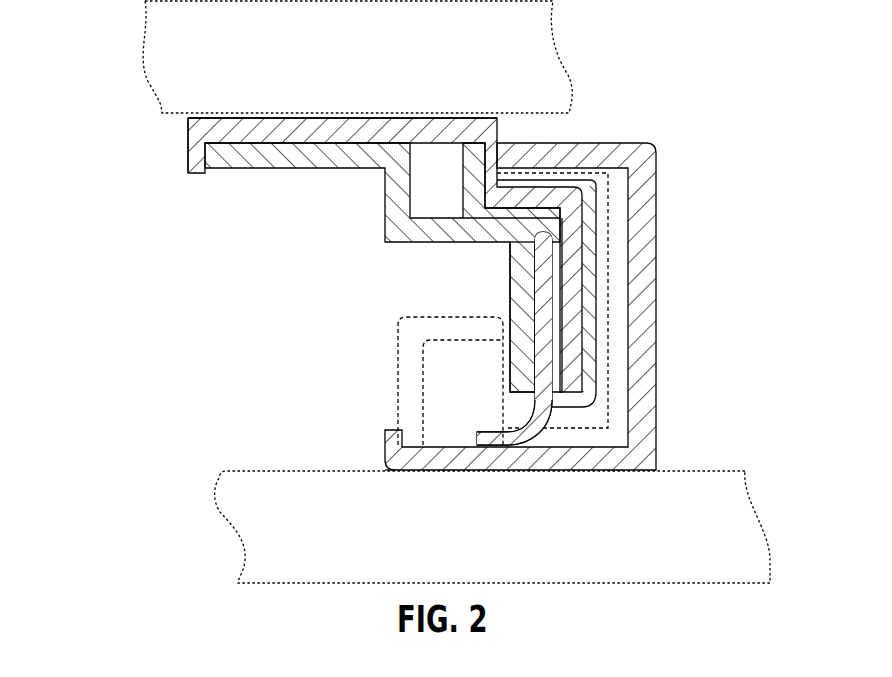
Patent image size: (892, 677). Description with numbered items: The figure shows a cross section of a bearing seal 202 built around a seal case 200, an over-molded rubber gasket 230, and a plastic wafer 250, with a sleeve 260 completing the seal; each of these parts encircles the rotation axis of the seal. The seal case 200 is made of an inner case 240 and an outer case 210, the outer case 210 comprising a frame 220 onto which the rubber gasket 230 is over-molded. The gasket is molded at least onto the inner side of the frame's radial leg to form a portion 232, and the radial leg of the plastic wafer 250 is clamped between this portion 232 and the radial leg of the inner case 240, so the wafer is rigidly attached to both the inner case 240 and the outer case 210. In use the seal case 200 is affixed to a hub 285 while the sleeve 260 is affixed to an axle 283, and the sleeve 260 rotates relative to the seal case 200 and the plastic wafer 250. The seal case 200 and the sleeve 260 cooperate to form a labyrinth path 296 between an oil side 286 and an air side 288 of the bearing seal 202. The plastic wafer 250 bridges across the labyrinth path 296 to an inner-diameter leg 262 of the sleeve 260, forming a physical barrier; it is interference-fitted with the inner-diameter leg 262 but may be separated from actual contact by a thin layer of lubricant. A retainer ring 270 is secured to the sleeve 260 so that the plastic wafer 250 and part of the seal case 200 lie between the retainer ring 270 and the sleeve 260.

The seal case 200 is at (169, 137).
The bearing seal 202 is at (266, 427).
The outer case 210 is at (442, 113).
The frame 220 is at (328, 112).
The rubber gasket 230 is at (558, 405).
The portion of rubber gasket 232 is at (513, 278).
The inner case 240 is at (291, 167).
The plastic wafer 250 is at (488, 432).
The sleeve 260 is at (661, 283).
The inner-diameter leg 262 is at (515, 428).
The retainer ring 270 is at (398, 365).
The axle 283 is at (755, 569).
The hub 285 is at (197, 34).
The oil side 286 is at (275, 319).
The air side 288 is at (770, 345).
The labyrinth path 296 is at (610, 325).